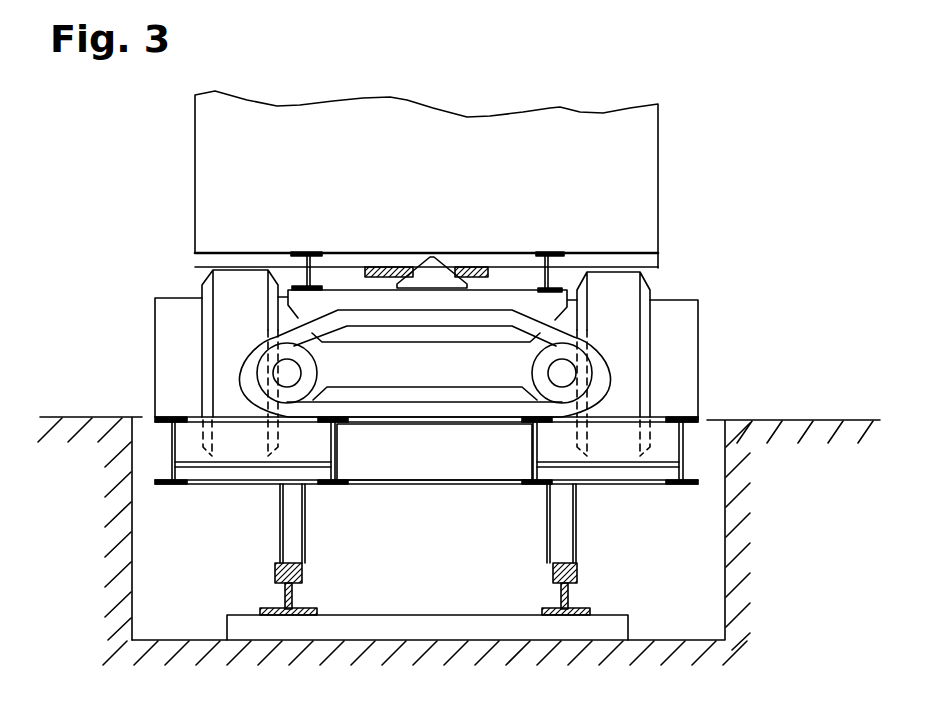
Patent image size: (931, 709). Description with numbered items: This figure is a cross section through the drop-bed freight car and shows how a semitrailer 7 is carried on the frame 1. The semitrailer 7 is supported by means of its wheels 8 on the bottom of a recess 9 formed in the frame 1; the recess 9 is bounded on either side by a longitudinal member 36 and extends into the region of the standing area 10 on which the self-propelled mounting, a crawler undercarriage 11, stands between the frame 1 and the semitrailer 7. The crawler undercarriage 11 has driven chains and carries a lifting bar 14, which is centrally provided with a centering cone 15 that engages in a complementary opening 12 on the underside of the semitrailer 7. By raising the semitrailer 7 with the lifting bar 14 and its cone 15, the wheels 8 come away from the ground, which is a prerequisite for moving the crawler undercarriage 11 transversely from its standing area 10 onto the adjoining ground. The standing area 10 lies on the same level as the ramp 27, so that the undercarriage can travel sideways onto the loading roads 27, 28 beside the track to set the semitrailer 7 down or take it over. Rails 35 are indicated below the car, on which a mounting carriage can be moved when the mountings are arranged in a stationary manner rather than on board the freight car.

The frame 1 is at (447, 484).
The semitrailer 7 is at (546, 135).
The wheels 8 is at (220, 352).
The recess 9 is at (293, 460).
The standing area 10 is at (230, 415).
The crawler undercarriage 11 is at (612, 326).
The complementary opening 12 is at (447, 266).
The lifting bar 14 is at (507, 300).
The centering cone 15 is at (424, 272).
The ramp 27 is at (803, 420).
The loading road 28 is at (74, 415).
The rails 35 is at (275, 572).
The longitudinal member 36 is at (170, 450).